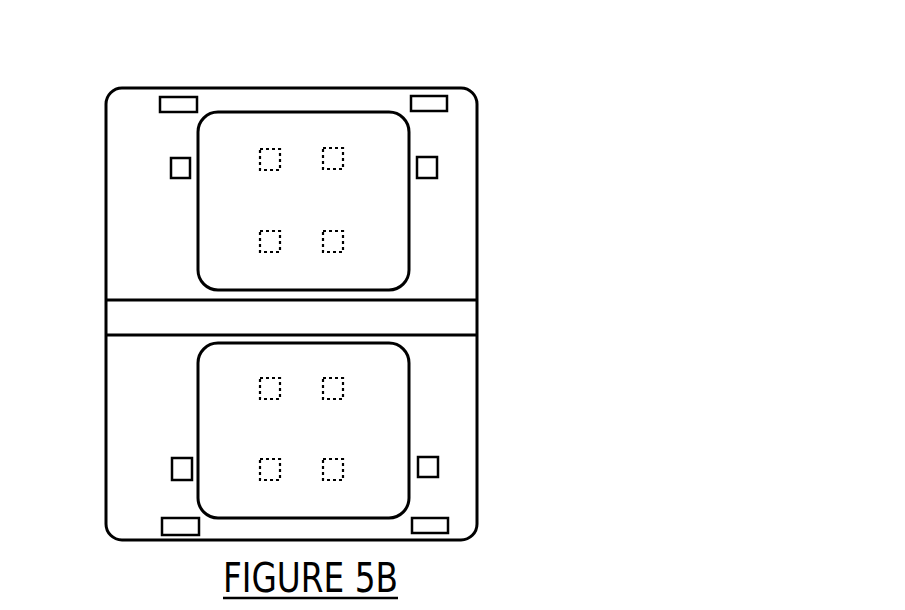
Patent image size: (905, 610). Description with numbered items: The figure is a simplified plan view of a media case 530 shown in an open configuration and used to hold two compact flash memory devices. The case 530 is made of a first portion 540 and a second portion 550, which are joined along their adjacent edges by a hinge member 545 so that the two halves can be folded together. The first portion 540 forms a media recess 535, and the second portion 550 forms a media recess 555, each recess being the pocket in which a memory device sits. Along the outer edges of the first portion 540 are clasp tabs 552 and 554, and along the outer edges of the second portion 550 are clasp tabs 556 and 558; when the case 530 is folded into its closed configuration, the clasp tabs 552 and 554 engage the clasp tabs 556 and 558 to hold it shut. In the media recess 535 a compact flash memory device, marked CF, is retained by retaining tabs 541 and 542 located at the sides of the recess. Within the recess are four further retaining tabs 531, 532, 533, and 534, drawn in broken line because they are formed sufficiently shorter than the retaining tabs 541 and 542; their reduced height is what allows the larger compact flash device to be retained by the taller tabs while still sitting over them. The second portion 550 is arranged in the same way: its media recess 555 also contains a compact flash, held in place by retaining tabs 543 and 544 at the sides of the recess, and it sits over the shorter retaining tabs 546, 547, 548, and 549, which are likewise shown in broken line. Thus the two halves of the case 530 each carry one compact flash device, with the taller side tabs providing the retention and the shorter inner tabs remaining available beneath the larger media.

The case 530 is at (490, 66).
The retaining tab 531 is at (271, 149).
The retaining tab 532 is at (333, 148).
The retaining tab 533 is at (260, 236).
The retaining tab 534 is at (333, 253).
The media recess 535 is at (455, 243).
The first portion 540 is at (478, 192).
The retaining tab 541 is at (437, 160).
The retaining tab 542 is at (171, 165).
The retaining tab 543 is at (438, 466).
The retaining tab 544 is at (172, 466).
The hinge member 545 is at (478, 317).
The retaining tab 546 is at (262, 460).
The retaining tab 547 is at (260, 383).
The retaining tab 548 is at (345, 386).
The retaining tab 549 is at (345, 470).
The second portion 550 is at (478, 418).
The clasp tab 552 is at (177, 97).
The clasp tab 554 is at (428, 96).
The media recess 555 is at (453, 390).
The clasp tab 556 is at (180, 535).
The clasp tab 558 is at (428, 533).